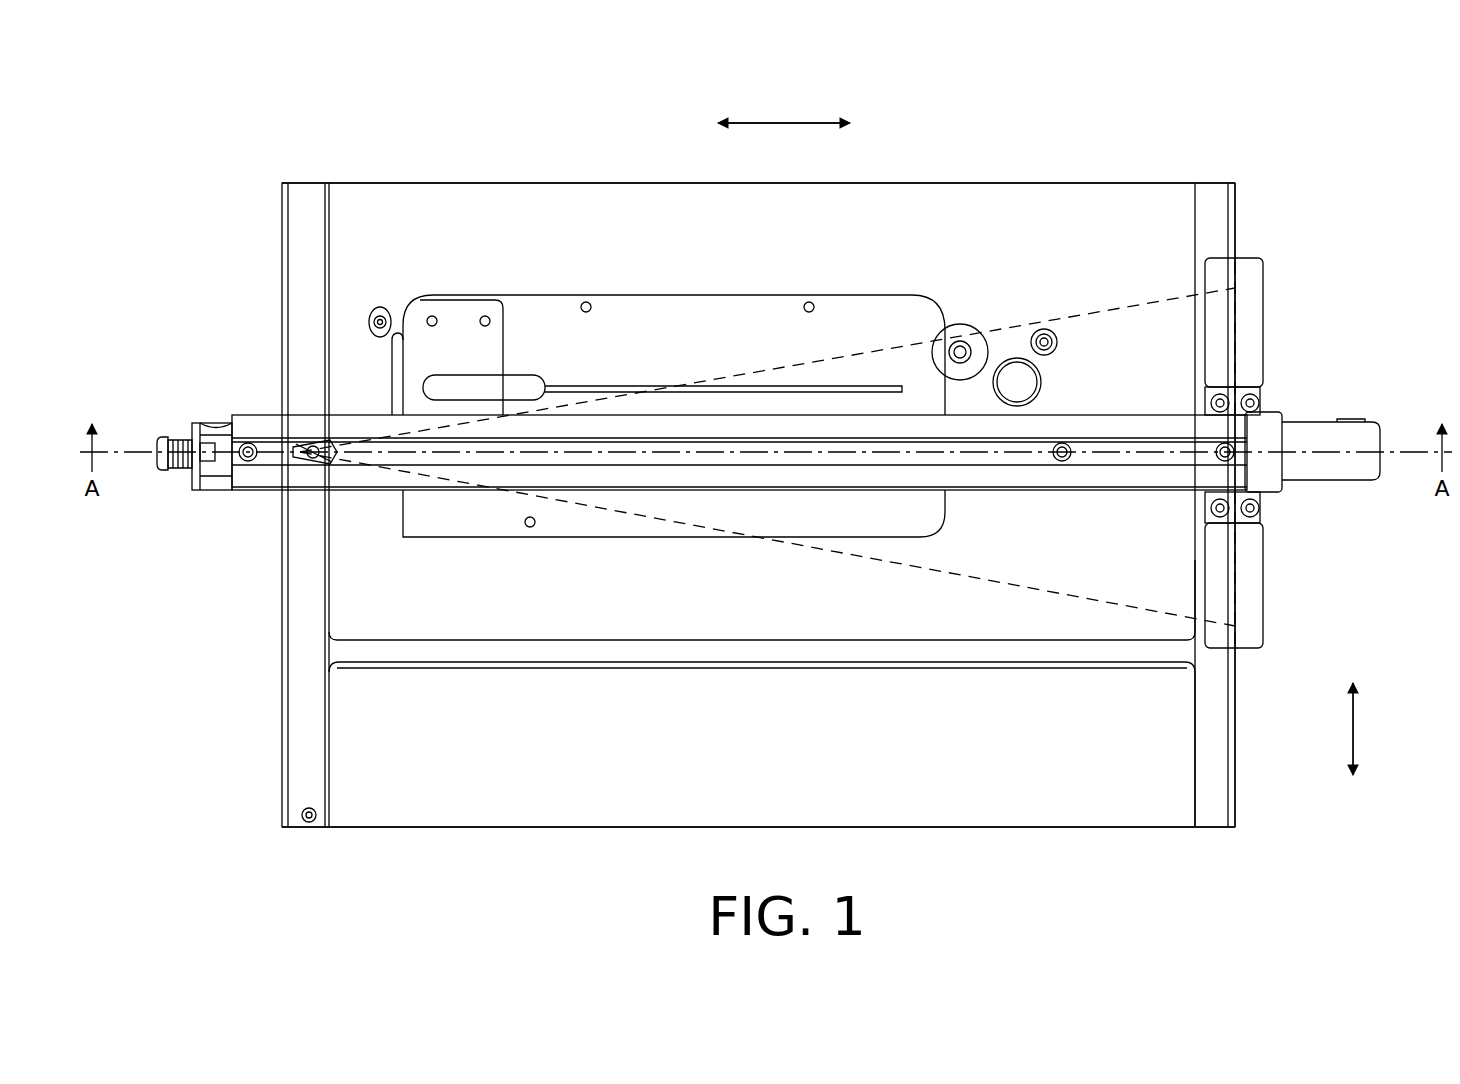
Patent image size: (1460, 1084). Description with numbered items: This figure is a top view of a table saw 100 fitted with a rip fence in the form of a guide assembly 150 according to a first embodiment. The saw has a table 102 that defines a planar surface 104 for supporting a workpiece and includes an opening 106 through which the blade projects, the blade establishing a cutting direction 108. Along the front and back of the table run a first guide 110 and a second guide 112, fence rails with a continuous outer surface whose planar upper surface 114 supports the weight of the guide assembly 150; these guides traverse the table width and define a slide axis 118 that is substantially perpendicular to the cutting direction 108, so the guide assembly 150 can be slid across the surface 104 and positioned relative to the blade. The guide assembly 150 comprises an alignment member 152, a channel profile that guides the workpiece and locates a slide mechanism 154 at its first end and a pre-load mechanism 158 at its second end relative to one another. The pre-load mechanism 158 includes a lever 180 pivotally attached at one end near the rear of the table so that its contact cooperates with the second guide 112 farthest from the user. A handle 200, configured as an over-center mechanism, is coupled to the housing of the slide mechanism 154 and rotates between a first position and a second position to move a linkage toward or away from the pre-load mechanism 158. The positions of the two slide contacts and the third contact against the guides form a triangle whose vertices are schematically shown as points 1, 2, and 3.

The table saw 100 is at (168, 160).
The table 102 is at (1100, 180).
The planar surface 104 is at (1020, 208).
The opening 106 is at (640, 388).
The cutting direction 108 is at (755, 123).
The first guide 110 is at (1237, 197).
The second guide 112 is at (280, 795).
The planar upper surface 114 is at (318, 200).
The slide axis 118 is at (1353, 740).
The guide assembly 150 is at (255, 393).
The alignment member 152 is at (357, 497).
The slide mechanism 154 is at (1282, 410).
The pre-load mechanism 158 is at (162, 432).
The lever 180 is at (210, 496).
The handle 200 is at (1362, 487).
The point 1 is at (1228, 290).
The point 2 is at (1228, 625).
The point 3 is at (287, 452).